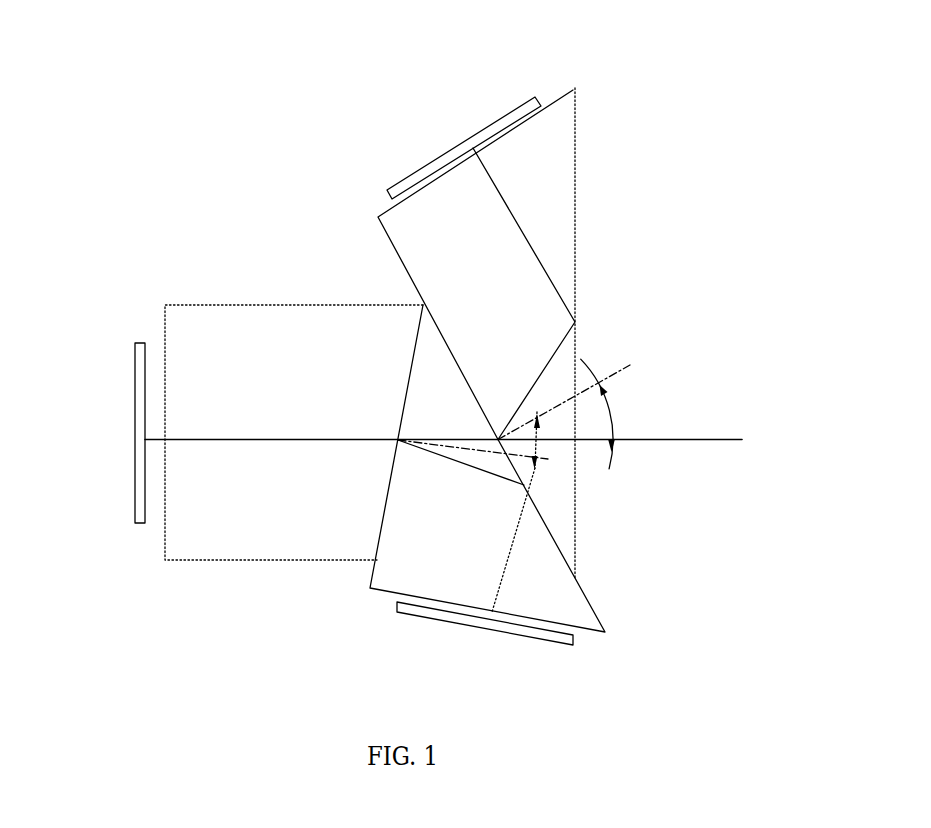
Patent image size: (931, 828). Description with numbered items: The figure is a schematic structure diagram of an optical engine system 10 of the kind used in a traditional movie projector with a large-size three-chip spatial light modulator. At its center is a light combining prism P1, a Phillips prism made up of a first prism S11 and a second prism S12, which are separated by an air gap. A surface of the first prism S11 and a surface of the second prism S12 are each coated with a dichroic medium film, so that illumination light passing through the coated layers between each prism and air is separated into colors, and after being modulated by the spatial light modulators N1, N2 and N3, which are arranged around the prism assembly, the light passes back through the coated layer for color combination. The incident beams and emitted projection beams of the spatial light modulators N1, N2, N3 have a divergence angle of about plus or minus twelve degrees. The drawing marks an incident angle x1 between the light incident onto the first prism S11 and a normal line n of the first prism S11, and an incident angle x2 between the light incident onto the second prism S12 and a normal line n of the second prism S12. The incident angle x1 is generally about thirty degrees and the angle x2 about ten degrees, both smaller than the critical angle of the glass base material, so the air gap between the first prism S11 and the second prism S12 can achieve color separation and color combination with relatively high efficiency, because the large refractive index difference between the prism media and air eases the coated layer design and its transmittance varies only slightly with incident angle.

The optical engine system 10 is at (459, 36).
The spatial light modulator N1 is at (460, 148).
The spatial light modulator N2 is at (138, 417).
The spatial light modulator N3 is at (513, 637).
The light combining prism P1 is at (598, 155).
The first prism S11 is at (566, 205).
The second prism S12 is at (393, 575).
The normal line n is at (615, 373).
The incident angle x1 is at (610, 414).
The incident angle x2 is at (528, 512).